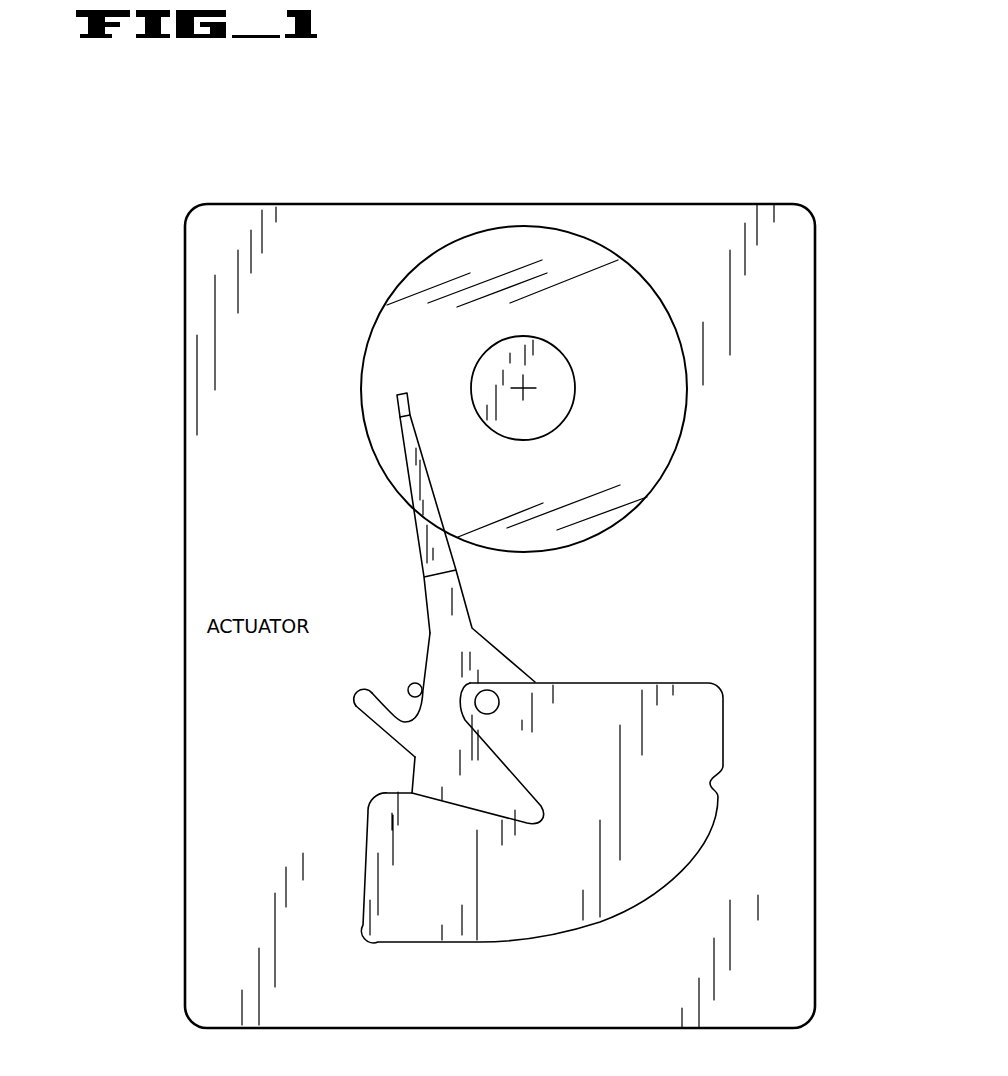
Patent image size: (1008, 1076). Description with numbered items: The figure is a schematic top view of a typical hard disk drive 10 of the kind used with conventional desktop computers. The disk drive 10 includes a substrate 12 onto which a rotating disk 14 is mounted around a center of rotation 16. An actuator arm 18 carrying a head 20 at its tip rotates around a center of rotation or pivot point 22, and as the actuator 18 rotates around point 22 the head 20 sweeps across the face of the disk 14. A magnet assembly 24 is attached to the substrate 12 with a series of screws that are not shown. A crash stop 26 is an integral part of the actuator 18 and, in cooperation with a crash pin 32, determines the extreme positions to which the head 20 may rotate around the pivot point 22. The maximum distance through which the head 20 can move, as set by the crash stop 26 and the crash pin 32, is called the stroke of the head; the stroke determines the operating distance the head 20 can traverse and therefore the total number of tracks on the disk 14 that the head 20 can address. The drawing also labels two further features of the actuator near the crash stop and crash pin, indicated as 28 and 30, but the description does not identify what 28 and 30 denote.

The disk drive 10 is at (547, 616).
The substrate 12 is at (792, 377).
The rotating disk 14 is at (637, 306).
The center of rotation 16 is at (524, 388).
The actuator arm 18 is at (425, 532).
The head 20 is at (398, 404).
The pivot point 22 is at (487, 703).
The magnet assembly 24 is at (695, 742).
The crash stop 26 is at (377, 724).
The latch end 28 is at (370, 686).
The actuator body portion 30 is at (425, 663).
The crash pin 32 is at (408, 688).